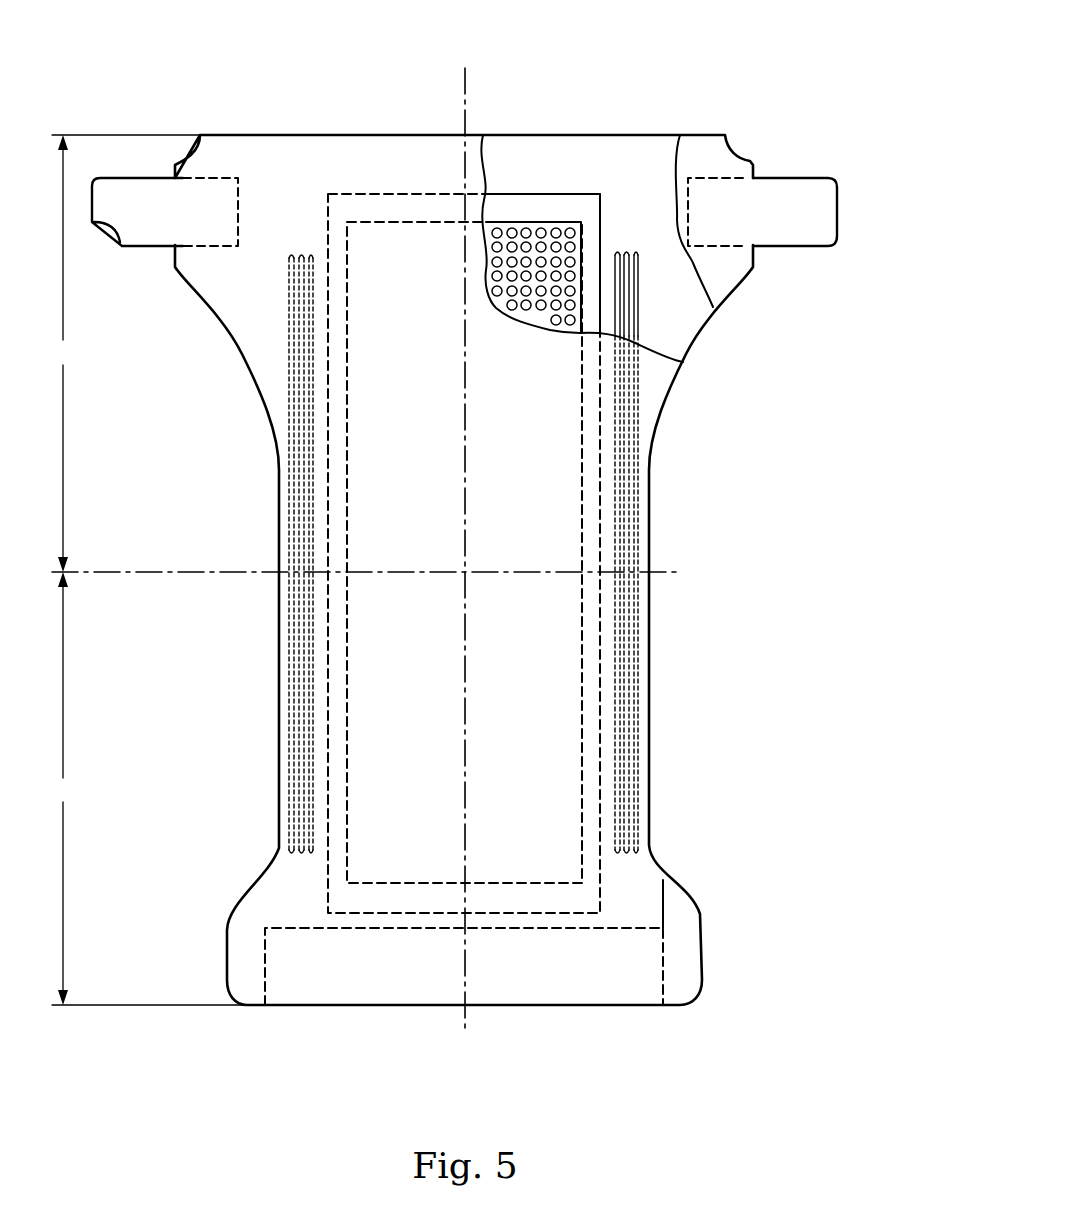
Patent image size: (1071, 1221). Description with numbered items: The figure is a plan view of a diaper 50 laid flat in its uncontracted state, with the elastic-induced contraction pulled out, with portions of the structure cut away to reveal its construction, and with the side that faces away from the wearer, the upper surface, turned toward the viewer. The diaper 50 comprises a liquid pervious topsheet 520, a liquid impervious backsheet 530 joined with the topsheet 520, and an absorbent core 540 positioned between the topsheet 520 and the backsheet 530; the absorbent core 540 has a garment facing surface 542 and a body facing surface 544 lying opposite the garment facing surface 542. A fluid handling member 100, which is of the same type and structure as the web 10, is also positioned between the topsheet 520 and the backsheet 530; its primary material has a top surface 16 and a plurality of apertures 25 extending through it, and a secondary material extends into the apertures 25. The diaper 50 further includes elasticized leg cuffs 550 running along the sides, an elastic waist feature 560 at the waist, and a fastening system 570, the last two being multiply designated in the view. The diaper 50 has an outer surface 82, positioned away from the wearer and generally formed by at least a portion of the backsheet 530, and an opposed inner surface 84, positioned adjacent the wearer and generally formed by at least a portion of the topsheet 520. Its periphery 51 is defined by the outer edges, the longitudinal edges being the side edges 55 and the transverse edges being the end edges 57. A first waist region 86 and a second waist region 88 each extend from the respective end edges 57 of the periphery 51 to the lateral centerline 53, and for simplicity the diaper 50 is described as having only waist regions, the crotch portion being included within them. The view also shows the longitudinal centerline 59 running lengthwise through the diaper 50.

The diaper 50 is at (715, 78).
The periphery 51 is at (237, 134).
The lateral centerline 53 is at (672, 572).
The side edges 55 is at (649, 590).
The end edges 57 is at (325, 134).
The longitudinal centerline 59 is at (465, 78).
The inner surface 84 is at (407, 155).
The outer surface 82 is at (567, 858).
The web 10 is at (417, 883).
The top surface 16 is at (574, 240).
The apertures 25 is at (578, 276).
The second waist region 88 is at (124, 353).
The first waist region 86 is at (147, 788).
The fluid handling member 100 is at (533, 312).
The topsheet 520 is at (503, 430).
The backsheet 530 is at (552, 155).
The absorbent core 540 is at (568, 194).
The garment facing surface 542 is at (592, 310).
The body facing surface 544 is at (506, 205).
The elasticized leg cuffs 550 is at (767, 290).
The elastic waist feature 560 is at (563, 983).
The fastening system 570 is at (145, 222).